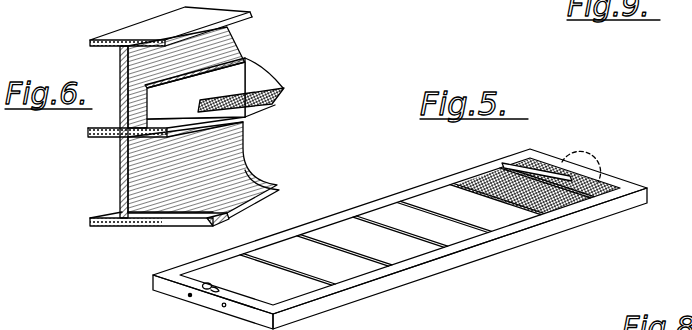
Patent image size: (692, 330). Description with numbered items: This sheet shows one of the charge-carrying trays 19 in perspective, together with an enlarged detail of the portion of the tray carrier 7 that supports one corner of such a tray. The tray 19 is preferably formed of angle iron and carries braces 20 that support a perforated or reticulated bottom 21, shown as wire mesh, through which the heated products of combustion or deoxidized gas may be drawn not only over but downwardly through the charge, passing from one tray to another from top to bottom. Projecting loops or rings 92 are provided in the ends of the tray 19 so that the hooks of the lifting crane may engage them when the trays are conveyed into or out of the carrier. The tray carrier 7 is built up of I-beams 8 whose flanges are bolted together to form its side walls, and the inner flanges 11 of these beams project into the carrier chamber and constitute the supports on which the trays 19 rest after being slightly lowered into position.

In FIG. 6, the tray carrier 7 is at (120, 70).
In FIG. 6, the I-beams 8 is at (131, 25).
In FIG. 6, the inner flanges 11 is at (168, 133).
In FIG. 6, the trays 19 is at (214, 88).
In FIG. 5, the trays 19 is at (340, 212).
In FIG. 5, the braces 20 is at (393, 236).
In FIG. 6, the perforated or reticulated bottom 21 is at (264, 103).
In FIG. 5, the perforated or reticulated bottom 21 is at (497, 173).
In FIG. 5, the projecting loops or rings 92 is at (208, 283).